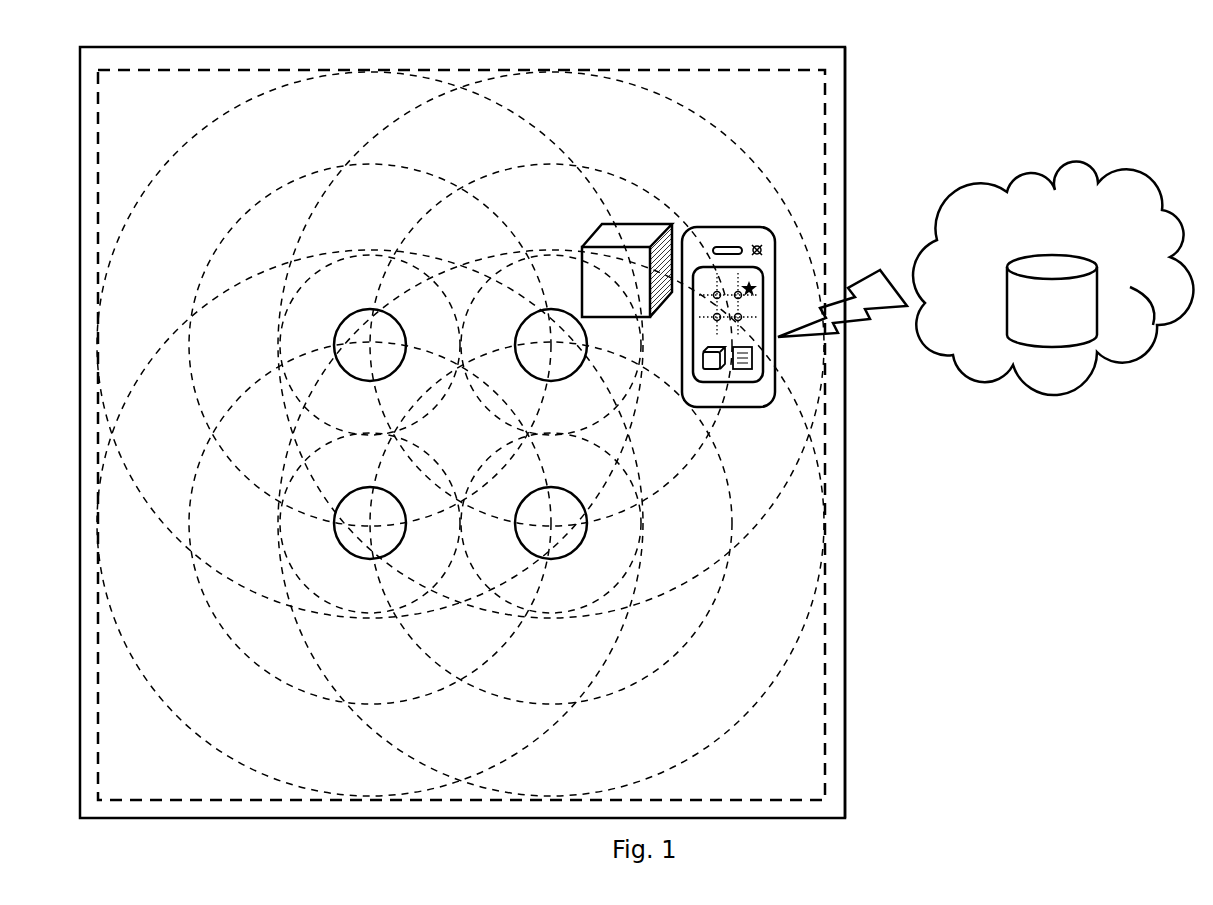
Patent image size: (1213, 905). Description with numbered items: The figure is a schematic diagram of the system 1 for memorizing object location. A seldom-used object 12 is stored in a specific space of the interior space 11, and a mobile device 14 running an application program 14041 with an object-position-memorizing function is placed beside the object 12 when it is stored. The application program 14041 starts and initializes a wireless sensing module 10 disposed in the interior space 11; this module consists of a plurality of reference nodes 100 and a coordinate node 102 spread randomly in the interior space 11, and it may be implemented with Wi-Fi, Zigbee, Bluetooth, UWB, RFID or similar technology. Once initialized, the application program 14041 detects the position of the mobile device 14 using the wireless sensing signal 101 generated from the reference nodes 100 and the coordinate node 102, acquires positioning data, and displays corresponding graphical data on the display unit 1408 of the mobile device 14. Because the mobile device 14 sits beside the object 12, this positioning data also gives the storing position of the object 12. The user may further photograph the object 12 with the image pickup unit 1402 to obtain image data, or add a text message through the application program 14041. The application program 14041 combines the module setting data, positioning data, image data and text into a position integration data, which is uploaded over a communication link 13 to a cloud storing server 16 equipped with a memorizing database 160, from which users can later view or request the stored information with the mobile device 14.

The system for memorizing object location 1 is at (97, 41).
The wireless sensing module 10 is at (825, 762).
The interior space 11 is at (845, 717).
The object 12 is at (627, 270).
The communication link 13 is at (783, 333).
The mobile device 14 is at (728, 225).
The cloud storing server 16 is at (1053, 278).
The reference node 100 is at (460, 434).
The wireless sensing signal 101 is at (807, 623).
The coordinate node 102 is at (551, 345).
The memorizing database 160 is at (1003, 300).
The image pickup unit 1402 is at (763, 232).
The display unit 1408 is at (728, 382).
The application program 14041 is at (757, 382).